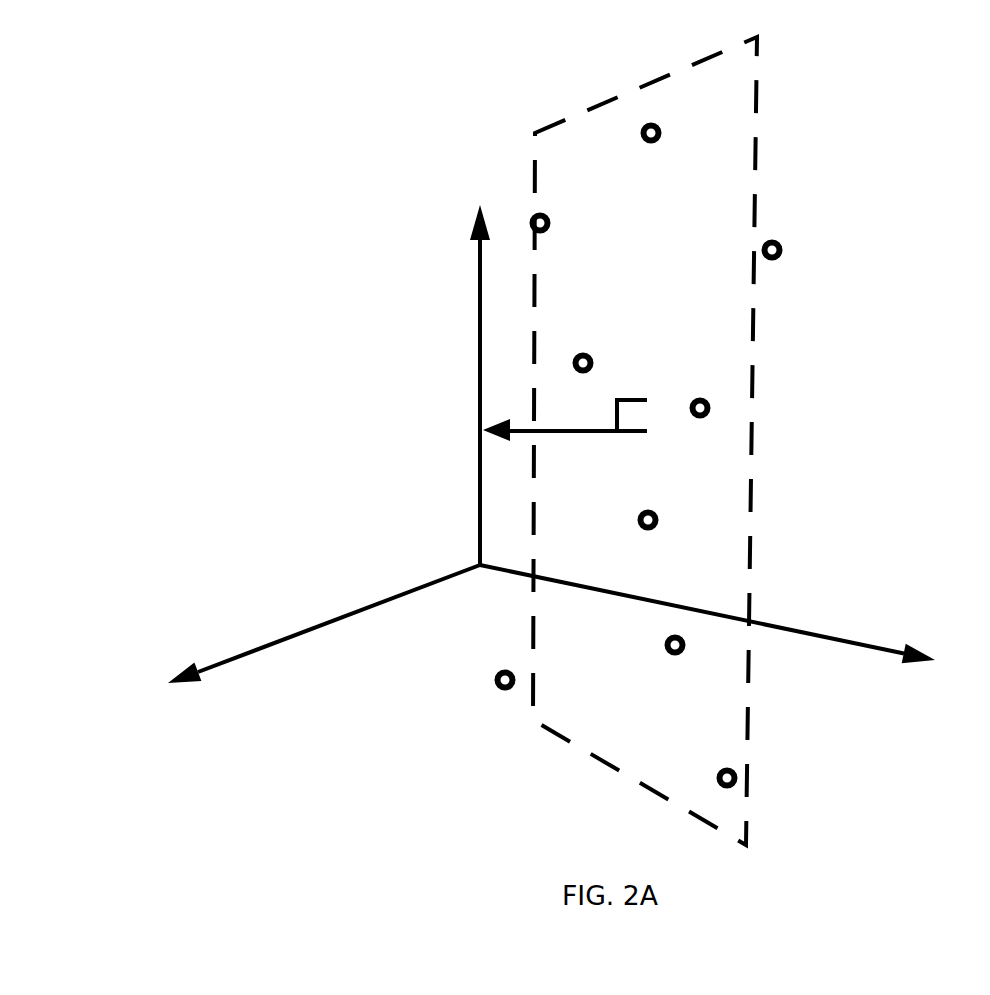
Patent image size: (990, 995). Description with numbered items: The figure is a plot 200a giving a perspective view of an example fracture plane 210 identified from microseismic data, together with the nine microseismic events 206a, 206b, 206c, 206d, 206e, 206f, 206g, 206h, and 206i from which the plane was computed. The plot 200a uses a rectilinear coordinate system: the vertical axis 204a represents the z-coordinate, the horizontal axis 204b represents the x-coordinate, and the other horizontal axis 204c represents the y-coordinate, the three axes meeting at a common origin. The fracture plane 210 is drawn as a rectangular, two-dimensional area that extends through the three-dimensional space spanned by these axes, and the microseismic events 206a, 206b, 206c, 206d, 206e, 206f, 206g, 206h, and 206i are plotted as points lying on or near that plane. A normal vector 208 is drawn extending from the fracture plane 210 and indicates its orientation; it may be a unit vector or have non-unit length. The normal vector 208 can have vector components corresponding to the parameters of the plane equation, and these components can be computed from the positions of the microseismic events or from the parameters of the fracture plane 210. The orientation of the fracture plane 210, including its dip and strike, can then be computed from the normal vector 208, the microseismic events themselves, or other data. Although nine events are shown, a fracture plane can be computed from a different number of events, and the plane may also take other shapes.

The plot 200a is at (368, 48).
The vertical axis 204a is at (478, 390).
The horizontal axis 204b is at (372, 603).
The horizontal axis 204c is at (855, 643).
The microseismic event 206a is at (548, 218).
The microseismic event 206b is at (659, 128).
The microseismic event 206c is at (780, 245).
The microseismic event 206d is at (591, 358).
The microseismic event 206e is at (708, 403).
The microseismic event 206f is at (656, 515).
The microseismic event 206g is at (513, 675).
The microseismic event 206h is at (683, 640).
The microseismic event 206i is at (735, 773).
The normal vector 208 is at (578, 433).
The fracture plane 210 is at (535, 137).